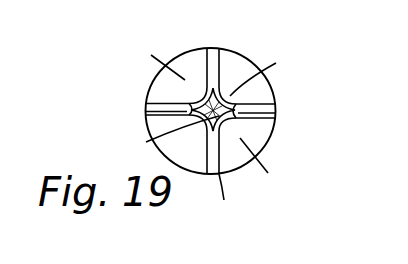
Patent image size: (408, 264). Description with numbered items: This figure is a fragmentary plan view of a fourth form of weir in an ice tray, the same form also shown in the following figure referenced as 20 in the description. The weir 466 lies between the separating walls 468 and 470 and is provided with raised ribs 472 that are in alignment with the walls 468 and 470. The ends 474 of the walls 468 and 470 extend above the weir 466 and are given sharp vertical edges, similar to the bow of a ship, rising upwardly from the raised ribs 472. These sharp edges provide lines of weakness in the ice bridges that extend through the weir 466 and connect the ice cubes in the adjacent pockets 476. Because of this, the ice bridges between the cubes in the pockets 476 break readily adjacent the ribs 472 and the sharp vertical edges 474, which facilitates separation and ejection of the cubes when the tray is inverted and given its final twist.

The drill 20 is at (174, 33).
The weir 466 is at (228, 97).
The separating wall 468 is at (222, 50).
The separating wall 470 is at (159, 103).
The raised ribs 472 is at (226, 99).
The ends of the walls 474 is at (276, 120).
The pockets 476 is at (192, 62).